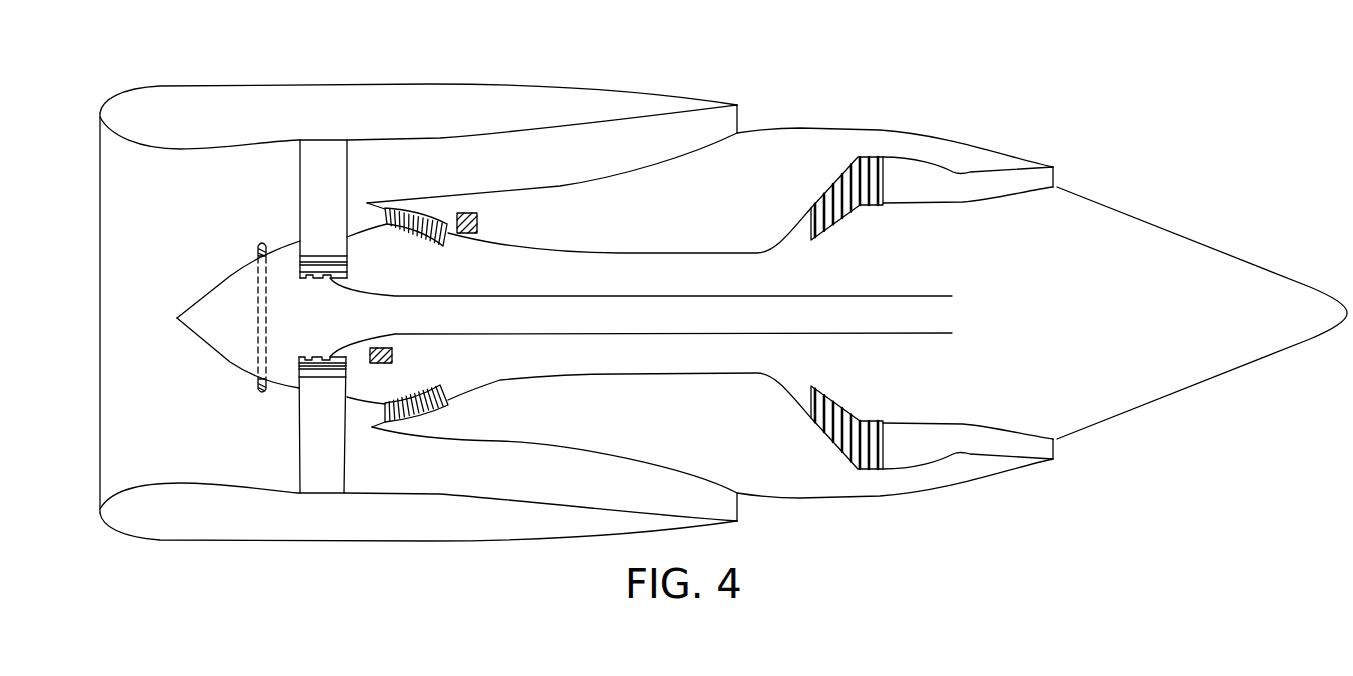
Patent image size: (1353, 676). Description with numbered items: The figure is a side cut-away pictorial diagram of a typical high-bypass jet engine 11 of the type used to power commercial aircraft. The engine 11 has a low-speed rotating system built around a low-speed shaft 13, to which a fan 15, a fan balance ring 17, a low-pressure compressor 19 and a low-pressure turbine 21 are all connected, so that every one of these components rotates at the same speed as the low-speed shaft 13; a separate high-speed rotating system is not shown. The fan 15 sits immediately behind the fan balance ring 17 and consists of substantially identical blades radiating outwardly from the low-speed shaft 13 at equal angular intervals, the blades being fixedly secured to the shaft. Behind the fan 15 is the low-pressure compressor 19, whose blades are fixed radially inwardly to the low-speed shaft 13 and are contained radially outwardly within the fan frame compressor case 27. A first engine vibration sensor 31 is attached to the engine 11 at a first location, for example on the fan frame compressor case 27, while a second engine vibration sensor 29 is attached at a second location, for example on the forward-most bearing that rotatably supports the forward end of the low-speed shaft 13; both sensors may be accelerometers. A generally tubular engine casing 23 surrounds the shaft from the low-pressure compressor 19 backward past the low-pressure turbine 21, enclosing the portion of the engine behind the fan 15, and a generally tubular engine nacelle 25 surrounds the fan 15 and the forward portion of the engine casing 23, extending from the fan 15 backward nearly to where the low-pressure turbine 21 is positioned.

The high-bypass jet engine 11 is at (877, 46).
The low-speed shaft 13 is at (542, 334).
The fan 15 is at (284, 188).
The fan balance ring 17 is at (257, 250).
The low-pressure compressor 19 is at (401, 244).
The low-pressure turbine 21 is at (803, 237).
The engine casing 23 is at (650, 193).
The engine nacelle 25 is at (432, 97).
The fan frame compressor case 27 is at (417, 237).
The second engine vibration sensor 29 is at (395, 355).
The first engine vibration sensor 31 is at (465, 212).